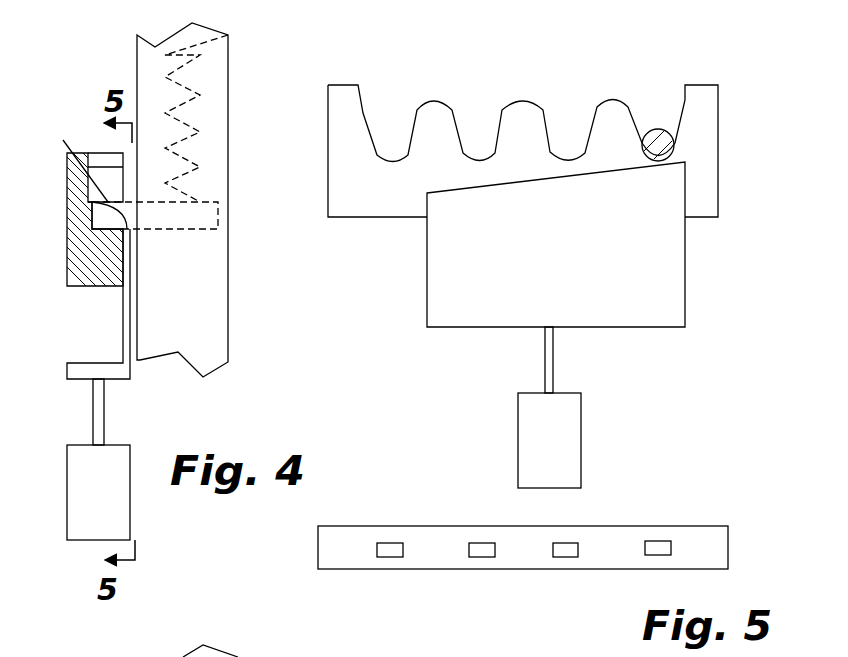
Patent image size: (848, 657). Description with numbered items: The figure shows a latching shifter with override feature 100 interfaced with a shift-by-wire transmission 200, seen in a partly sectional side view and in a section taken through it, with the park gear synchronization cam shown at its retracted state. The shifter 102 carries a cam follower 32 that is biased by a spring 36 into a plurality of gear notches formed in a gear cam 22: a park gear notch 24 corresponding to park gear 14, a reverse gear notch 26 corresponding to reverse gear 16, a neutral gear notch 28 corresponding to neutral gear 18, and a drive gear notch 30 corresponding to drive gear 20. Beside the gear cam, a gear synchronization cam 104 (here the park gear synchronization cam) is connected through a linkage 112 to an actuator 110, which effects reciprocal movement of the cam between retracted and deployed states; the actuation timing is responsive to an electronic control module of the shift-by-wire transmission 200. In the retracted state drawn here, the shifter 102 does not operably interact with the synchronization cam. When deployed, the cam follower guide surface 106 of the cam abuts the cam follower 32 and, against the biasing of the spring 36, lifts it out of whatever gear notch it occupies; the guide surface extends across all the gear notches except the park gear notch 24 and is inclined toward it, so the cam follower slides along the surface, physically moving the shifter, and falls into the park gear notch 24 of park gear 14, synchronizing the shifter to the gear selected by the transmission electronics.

In FIG. 5, the park gear 14 is at (397, 543).
In FIG. 5, the reverse gear 16 is at (482, 543).
In FIG. 5, the neutral gear 18 is at (563, 543).
In FIG. 5, the drive gear 20 is at (657, 541).
In FIG. 4, the gear cam 22 is at (58, 240).
In FIG. 5, the gear cam 22 is at (722, 96).
In FIG. 5, the park gear notch 24 is at (383, 122).
In FIG. 5, the reverse gear notch 26 is at (480, 123).
In FIG. 5, the neutral gear notch 28 is at (565, 122).
In FIG. 5, the drive gear notch 30 is at (662, 120).
In FIG. 4, the cam follower 32 is at (80, 160).
In FIG. 5, the cam follower 32 is at (653, 129).
In FIG. 4, the spring 36 is at (228, 35).
In FIG. 5, the latching shifter with override feature 100 is at (456, 412).
In FIG. 4, the shifter 102 is at (230, 150).
In FIG. 4, the gear synchronization cam 104 is at (123, 308).
In FIG. 5, the gear synchronization cam 104 is at (687, 233).
In FIG. 4, the cam follower guide surface 106 is at (92, 203).
In FIG. 5, the cam follower guide surface 106 is at (532, 178).
In FIG. 4, the actuator 110 is at (128, 490).
In FIG. 5, the actuator 110 is at (582, 400).
In FIG. 4, the linkage 112 is at (93, 402).
In FIG. 5, the linkage 112 is at (545, 345).
In FIG. 5, the shift-by-wire transmission 200 is at (317, 540).